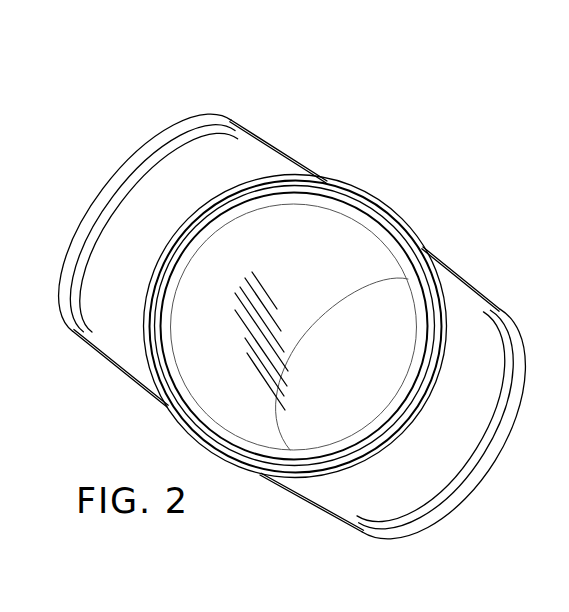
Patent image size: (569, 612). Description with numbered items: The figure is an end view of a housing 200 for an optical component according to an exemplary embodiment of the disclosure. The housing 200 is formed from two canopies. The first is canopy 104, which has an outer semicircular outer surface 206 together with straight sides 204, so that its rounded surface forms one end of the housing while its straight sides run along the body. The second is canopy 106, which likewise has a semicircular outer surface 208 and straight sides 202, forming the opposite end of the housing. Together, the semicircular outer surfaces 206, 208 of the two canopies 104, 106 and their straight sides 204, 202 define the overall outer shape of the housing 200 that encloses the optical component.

The housing 200 is at (293, 304).
The canopy 104 is at (175, 245).
The canopy 106 is at (412, 400).
The straight sides 202 is at (469, 284).
The straight sides 204 is at (290, 157).
The outer semicircular outer surface 206 is at (94, 188).
The semicircular outer surface 208 is at (459, 504).